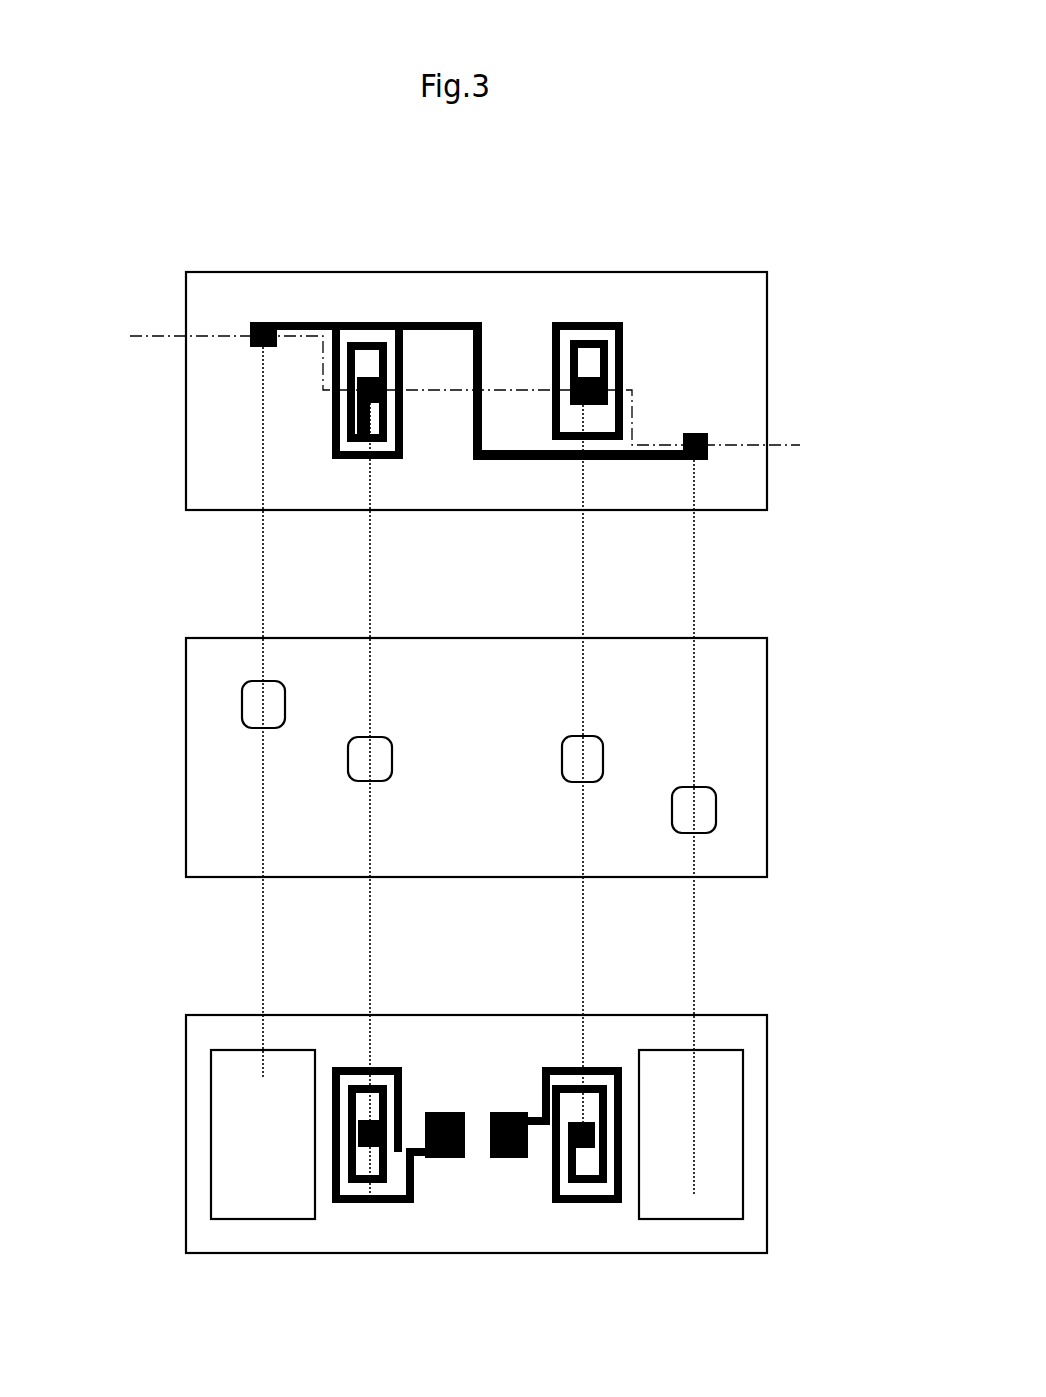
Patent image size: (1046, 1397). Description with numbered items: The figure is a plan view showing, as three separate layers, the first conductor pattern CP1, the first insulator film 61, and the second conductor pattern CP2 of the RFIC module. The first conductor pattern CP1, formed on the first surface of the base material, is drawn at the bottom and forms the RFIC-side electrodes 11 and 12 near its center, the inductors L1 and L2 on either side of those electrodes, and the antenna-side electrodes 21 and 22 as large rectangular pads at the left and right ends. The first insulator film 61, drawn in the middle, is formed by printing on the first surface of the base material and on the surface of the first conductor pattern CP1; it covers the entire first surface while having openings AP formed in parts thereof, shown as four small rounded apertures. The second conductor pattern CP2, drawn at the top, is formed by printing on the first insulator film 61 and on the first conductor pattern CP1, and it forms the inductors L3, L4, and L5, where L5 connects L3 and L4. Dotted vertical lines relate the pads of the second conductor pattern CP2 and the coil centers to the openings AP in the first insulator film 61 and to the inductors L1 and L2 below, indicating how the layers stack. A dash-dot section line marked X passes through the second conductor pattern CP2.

The inductor L1 is at (373, 1203).
The inductor L2 is at (596, 1203).
The inductor L3 is at (372, 340).
The inductor L4 is at (587, 338).
The inductor L5 is at (482, 360).
The RFIC-side electrode 11 is at (435, 1112).
The RFIC-side electrode 12 is at (520, 1112).
The antenna-side electrode 21 is at (235, 1133).
The antenna-side electrode 22 is at (726, 1133).
The first insulator film 61 is at (192, 758).
The opening AP is at (363, 742).
The first conductor pattern CP1 is at (160, 1161).
The second conductor pattern CP2 is at (160, 421).
The cross-section line X is at (137, 342).